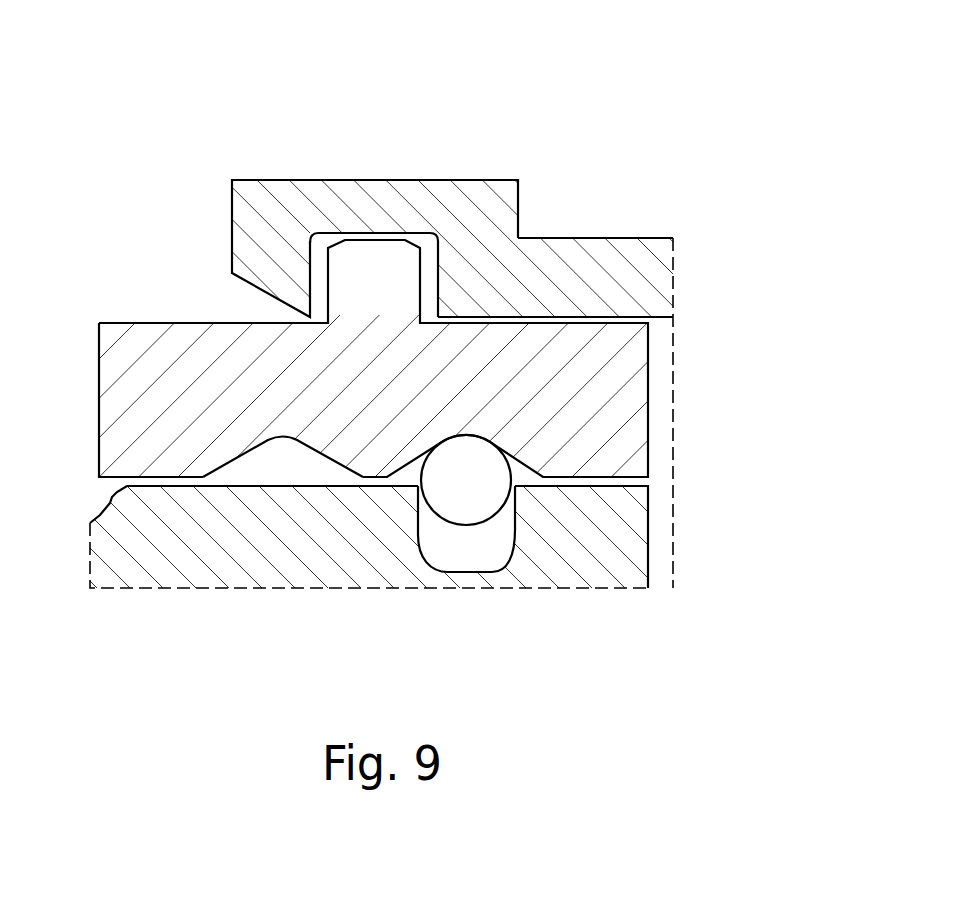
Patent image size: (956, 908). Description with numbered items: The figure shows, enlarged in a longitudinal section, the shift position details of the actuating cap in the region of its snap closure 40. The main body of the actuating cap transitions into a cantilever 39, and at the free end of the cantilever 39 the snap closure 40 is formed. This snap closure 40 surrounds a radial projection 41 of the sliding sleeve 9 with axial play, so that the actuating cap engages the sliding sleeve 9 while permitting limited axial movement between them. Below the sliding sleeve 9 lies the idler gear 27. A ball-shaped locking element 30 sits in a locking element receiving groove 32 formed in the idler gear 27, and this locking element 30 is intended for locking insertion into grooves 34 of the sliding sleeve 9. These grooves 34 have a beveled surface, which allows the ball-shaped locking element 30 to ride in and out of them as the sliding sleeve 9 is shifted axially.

The sliding sleeve 9 is at (617, 388).
The idler gear 27 is at (217, 552).
The locking element 30 is at (490, 502).
The locking element receiving groove 32 is at (467, 557).
The grooves 34 is at (270, 455).
The cantilever 39 is at (562, 272).
The snap closure 40 is at (328, 170).
The radial projection 41 is at (380, 262).